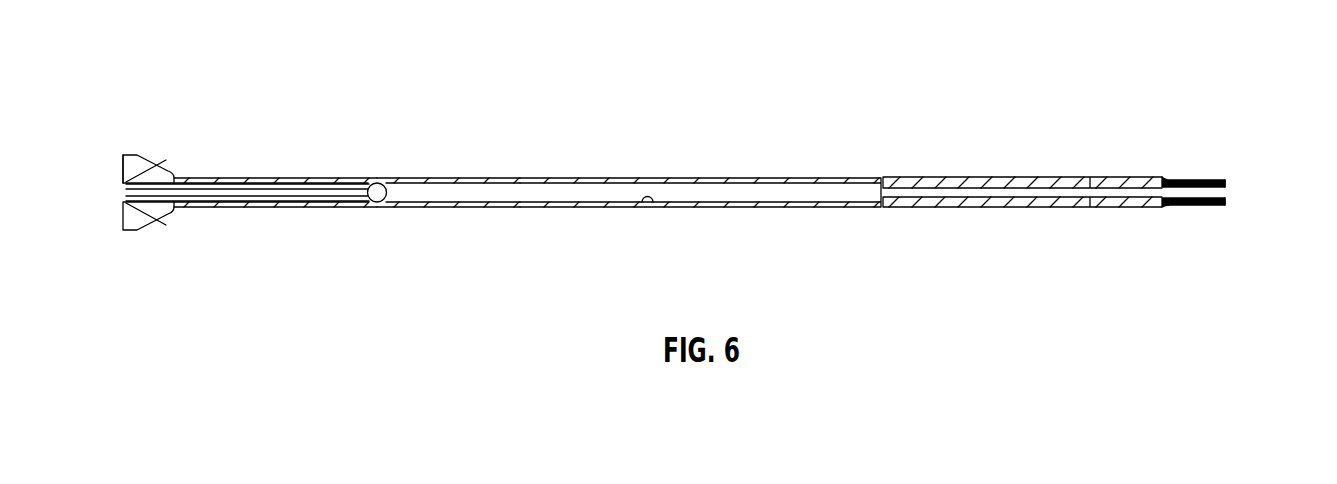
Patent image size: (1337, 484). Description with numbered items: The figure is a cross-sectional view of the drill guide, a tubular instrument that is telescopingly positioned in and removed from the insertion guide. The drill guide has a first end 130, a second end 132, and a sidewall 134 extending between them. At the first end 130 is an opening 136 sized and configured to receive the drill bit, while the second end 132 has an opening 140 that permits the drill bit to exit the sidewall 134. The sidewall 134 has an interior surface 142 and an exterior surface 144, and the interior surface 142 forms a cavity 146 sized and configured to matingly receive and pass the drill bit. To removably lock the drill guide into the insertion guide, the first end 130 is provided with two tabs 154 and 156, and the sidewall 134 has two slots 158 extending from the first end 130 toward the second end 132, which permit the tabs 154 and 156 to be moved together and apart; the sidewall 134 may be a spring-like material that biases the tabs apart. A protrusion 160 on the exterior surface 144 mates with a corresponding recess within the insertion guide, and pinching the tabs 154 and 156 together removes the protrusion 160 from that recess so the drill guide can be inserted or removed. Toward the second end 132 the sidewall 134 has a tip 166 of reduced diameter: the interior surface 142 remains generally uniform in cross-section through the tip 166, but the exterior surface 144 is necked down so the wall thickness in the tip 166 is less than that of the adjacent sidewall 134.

The first end 130 is at (122, 170).
The second end 132 is at (1226, 185).
The sidewall 134 is at (433, 177).
The opening 136 is at (128, 193).
The opening 140 is at (1226, 193).
The interior surface 142 is at (650, 205).
The exterior surface 144 is at (602, 178).
The cavity 146 is at (757, 199).
The tab 154 is at (148, 167).
The tab 156 is at (148, 218).
The slots 158 is at (318, 197).
The protrusion 160 is at (192, 175).
The tip 166 is at (1180, 180).